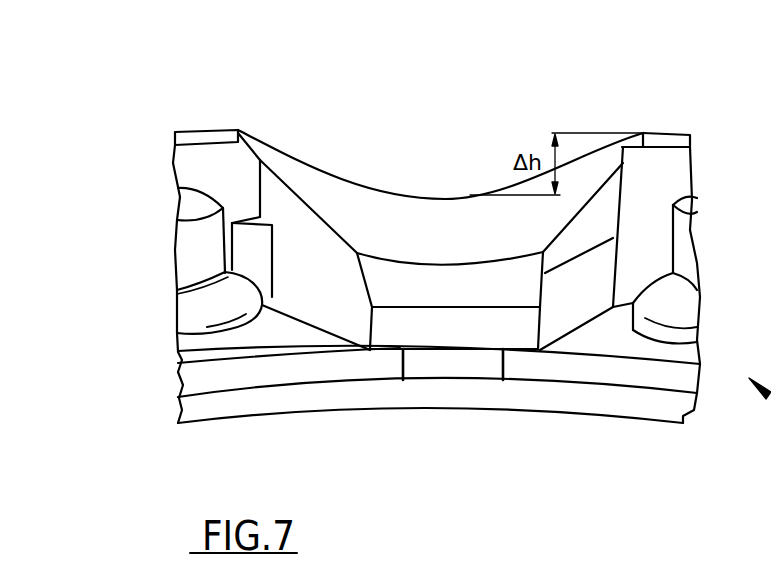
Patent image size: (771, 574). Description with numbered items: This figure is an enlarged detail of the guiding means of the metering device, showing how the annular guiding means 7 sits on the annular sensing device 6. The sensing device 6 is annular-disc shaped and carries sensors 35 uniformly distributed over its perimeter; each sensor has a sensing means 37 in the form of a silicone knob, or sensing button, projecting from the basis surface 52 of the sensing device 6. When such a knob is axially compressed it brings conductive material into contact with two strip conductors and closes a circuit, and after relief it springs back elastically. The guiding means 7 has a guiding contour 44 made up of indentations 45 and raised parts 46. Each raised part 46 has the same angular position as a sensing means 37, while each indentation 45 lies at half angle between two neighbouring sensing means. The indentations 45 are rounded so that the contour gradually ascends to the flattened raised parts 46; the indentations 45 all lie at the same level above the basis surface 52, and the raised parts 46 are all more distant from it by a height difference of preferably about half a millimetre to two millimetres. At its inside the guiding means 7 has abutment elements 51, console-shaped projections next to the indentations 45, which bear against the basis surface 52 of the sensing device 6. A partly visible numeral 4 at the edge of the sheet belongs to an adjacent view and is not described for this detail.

The annular sensing device 6 is at (592, 363).
The annular guiding means 7 is at (675, 173).
The sensor 35 is at (196, 306).
The sensing means 37 is at (198, 258).
The guiding contour 44 is at (300, 177).
The indentation 45 is at (445, 197).
The raised part 46 is at (200, 137).
The abutment element 51 is at (465, 283).
The basis surface 52 is at (300, 335).
The housing 4 is at (760, 429).